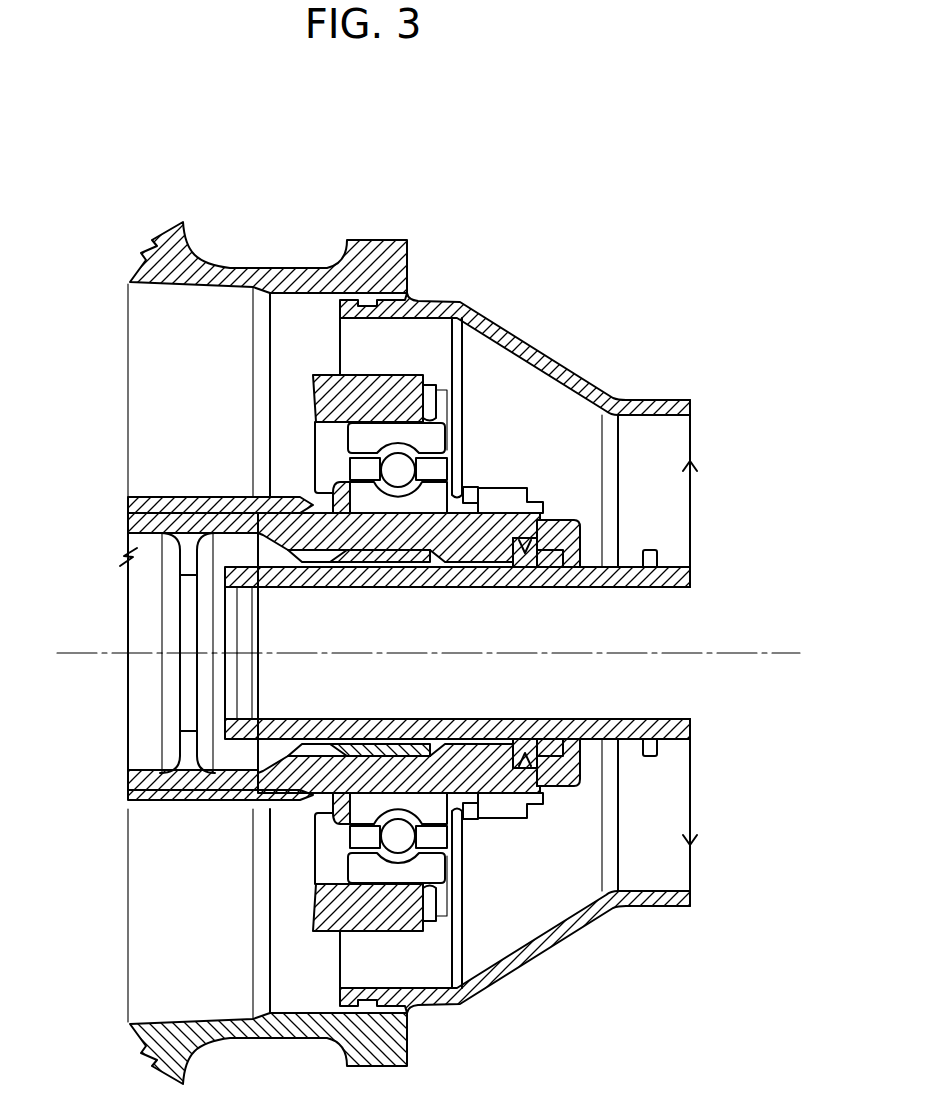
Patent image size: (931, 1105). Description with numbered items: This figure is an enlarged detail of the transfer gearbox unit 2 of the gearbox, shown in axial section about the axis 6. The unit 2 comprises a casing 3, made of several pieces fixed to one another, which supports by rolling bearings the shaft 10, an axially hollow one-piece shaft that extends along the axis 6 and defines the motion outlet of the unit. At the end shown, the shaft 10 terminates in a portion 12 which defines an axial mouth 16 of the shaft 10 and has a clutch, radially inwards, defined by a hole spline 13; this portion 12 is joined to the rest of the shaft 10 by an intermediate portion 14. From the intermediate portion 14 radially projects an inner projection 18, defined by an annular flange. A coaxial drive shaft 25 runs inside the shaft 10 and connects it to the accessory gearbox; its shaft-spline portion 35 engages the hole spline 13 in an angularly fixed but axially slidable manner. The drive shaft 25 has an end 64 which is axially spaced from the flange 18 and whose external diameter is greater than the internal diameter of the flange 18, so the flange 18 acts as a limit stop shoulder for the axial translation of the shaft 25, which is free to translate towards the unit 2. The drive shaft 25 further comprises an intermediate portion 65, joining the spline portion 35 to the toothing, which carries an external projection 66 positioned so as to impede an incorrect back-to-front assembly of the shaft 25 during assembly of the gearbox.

The transfer gearbox unit 2 is at (253, 254).
The casing 3 is at (187, 258).
The axis 6 is at (85, 652).
The shaft 10 is at (151, 514).
The portion 12 is at (325, 495).
The hole spline 13 is at (288, 523).
The intermediate portion 14 is at (213, 522).
The axial mouth 16 is at (586, 548).
The inner projection 18 is at (185, 573).
The drive shaft 25 is at (673, 743).
The portion 35 is at (355, 565).
The end 64 is at (238, 740).
The intermediate portion 65 is at (643, 718).
The external projection 66 is at (652, 758).